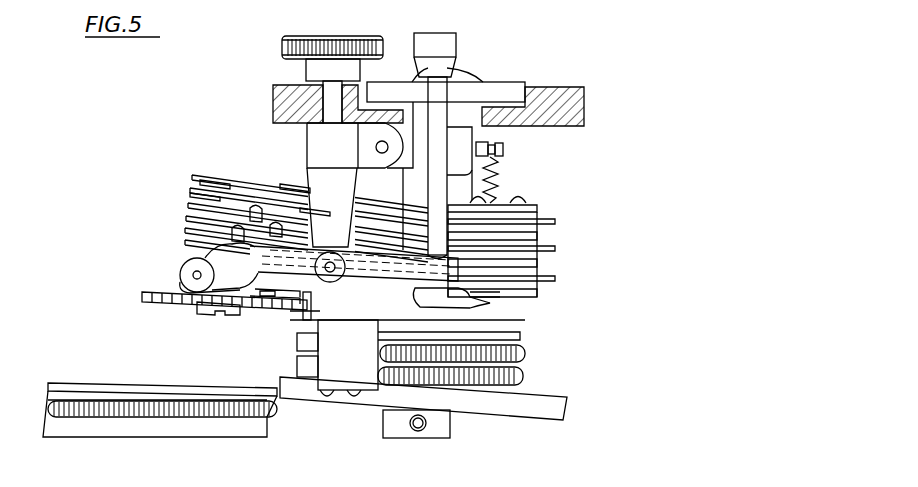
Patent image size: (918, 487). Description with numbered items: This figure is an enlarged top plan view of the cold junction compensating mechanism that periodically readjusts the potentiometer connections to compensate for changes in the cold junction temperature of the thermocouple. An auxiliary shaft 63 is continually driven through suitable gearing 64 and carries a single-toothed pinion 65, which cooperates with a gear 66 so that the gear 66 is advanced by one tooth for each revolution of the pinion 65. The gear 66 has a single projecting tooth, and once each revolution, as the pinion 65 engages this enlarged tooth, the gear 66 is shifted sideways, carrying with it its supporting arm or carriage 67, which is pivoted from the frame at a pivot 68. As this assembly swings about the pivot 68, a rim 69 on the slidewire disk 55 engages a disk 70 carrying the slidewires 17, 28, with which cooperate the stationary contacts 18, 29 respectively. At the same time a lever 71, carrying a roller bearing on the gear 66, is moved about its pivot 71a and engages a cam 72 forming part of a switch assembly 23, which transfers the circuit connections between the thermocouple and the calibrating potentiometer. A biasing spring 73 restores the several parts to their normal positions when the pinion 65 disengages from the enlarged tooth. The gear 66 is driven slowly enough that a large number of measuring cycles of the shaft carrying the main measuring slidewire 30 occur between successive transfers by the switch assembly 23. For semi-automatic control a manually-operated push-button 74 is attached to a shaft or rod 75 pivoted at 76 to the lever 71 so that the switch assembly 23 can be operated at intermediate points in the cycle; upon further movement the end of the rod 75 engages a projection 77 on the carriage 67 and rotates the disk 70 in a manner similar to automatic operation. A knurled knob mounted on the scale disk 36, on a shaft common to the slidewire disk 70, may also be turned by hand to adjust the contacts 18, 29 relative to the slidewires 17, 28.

The gearing 64 is at (282, 46).
The auxiliary shaft 63 is at (330, 92).
The pivot 68 is at (375, 147).
The pivot 76 is at (472, 84).
The scale disk 36 is at (507, 100).
The push-button 74 is at (448, 42).
The shaft or rod 75 is at (433, 100).
The biasing spring 73 is at (497, 164).
The supporting arm or carriage 67 is at (456, 190).
The switch assembly 23 is at (190, 206).
The pivot 71a is at (330, 252).
The cam 72 is at (213, 252).
The lever 71 is at (208, 280).
The gear 66 is at (198, 303).
The single-toothed pinion 65 is at (305, 318).
The stationary contact 18 is at (300, 343).
The stationary contact 29 is at (300, 366).
The projection 77 is at (468, 312).
The slidewire 17 is at (526, 358).
The slidewire 28 is at (527, 378).
The disk 70 is at (515, 412).
The rim 69 is at (276, 394).
The main measuring slidewire 30 is at (268, 417).
The slidewire disk 55 is at (203, 427).